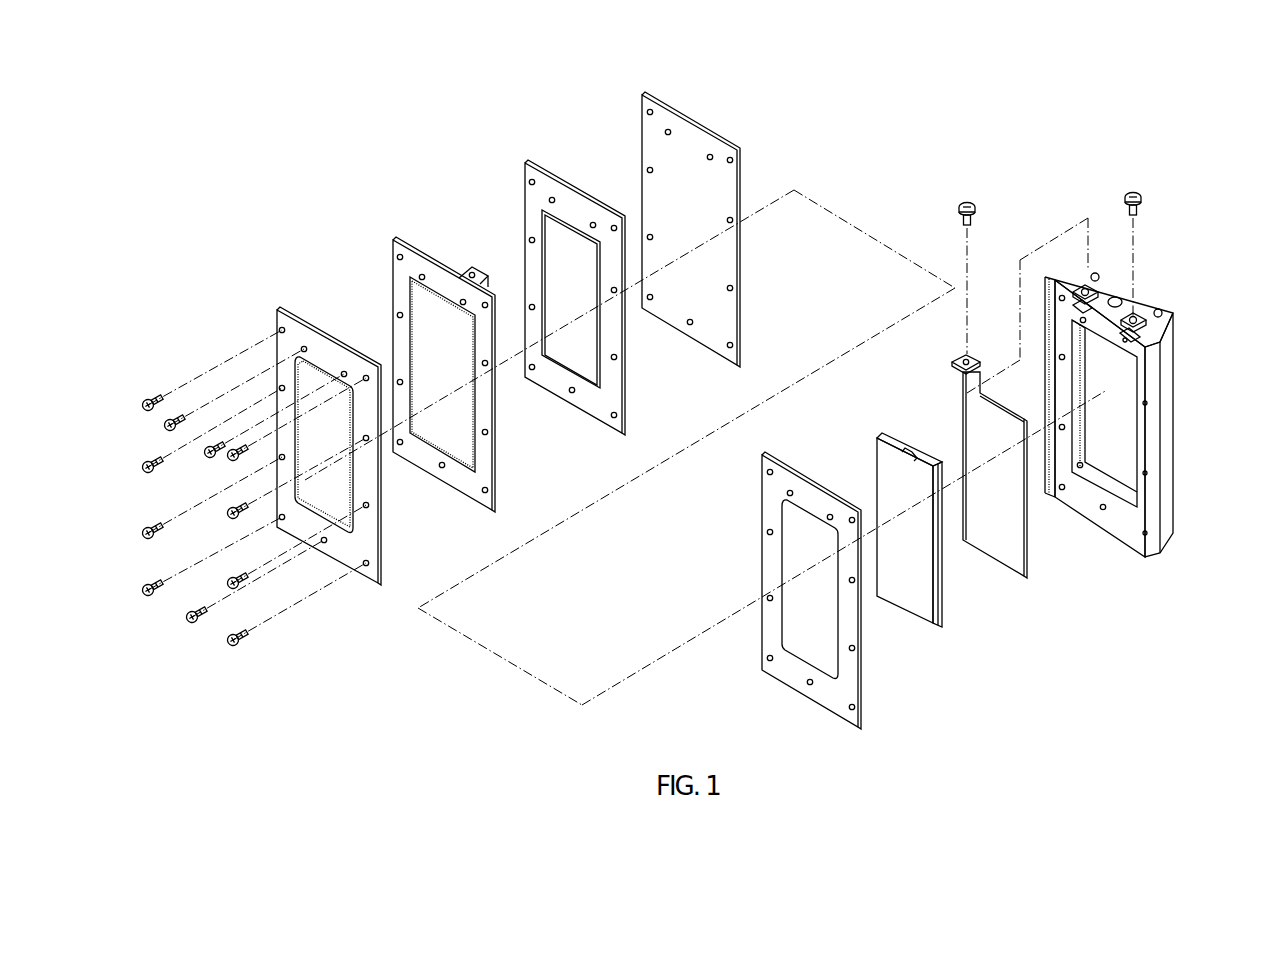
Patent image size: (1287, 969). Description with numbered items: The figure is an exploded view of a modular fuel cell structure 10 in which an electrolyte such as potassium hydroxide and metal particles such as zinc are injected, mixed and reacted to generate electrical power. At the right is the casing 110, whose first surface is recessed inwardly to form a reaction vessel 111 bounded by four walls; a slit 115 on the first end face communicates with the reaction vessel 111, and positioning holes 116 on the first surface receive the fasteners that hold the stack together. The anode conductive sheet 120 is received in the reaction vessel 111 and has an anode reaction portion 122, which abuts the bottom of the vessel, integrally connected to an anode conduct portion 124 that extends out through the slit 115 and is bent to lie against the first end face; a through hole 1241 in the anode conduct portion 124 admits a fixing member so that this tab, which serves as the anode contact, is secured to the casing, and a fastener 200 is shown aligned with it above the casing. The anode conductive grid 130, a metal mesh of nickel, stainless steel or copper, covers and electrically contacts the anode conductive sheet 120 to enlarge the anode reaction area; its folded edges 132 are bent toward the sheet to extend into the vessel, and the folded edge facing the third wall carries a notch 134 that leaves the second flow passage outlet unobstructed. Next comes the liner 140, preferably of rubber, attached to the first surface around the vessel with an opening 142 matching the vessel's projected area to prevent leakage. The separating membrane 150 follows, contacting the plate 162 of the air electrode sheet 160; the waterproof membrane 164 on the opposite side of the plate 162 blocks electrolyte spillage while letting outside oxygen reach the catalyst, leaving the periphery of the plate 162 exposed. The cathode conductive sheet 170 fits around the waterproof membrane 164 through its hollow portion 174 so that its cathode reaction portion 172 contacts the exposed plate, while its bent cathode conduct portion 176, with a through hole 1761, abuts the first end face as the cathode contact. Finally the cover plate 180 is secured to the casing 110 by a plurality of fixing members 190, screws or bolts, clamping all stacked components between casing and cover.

The modular fuel cell structure 10 is at (701, 408).
The casing 110 is at (1161, 396).
The reaction vessel 111 is at (1113, 420).
The slit 115 is at (1090, 283).
The positioning holes 116 is at (1103, 512).
The anode conductive sheet 120 is at (995, 439).
The anode reaction portion 122 is at (997, 525).
The anode conduct portion 124 is at (982, 392).
The through hole 1241 is at (951, 361).
The anode conductive grid 130 is at (914, 548).
The folded edge 132 is at (880, 440).
The notch 134 is at (912, 452).
The liner 140 is at (876, 612).
The opening 142 is at (800, 660).
The separating membrane 150 is at (713, 123).
The air electrode sheet 160 is at (553, 259).
The plate 162 is at (580, 207).
The waterproof membrane 164 is at (530, 224).
The cathode conductive sheet 170 is at (382, 302).
The cathode reaction portion 172 is at (392, 283).
The hollow portion 174 is at (408, 330).
The cathode conduct portion 176 is at (445, 210).
The through hole 1761 is at (470, 272).
The cover plate 180 is at (274, 307).
The fixing members 190 is at (148, 396).
The terminal screw 200 is at (963, 196).